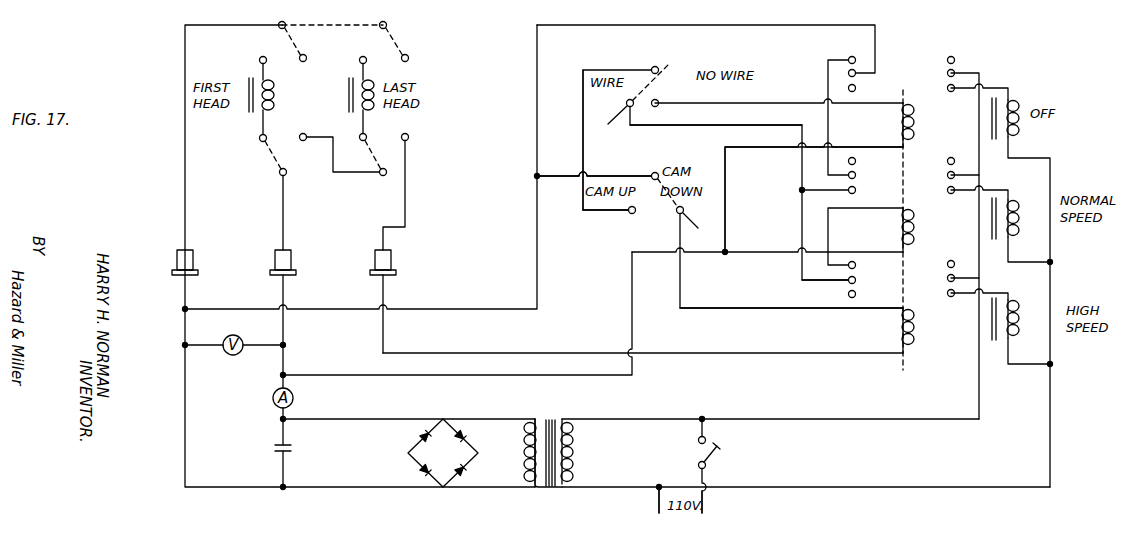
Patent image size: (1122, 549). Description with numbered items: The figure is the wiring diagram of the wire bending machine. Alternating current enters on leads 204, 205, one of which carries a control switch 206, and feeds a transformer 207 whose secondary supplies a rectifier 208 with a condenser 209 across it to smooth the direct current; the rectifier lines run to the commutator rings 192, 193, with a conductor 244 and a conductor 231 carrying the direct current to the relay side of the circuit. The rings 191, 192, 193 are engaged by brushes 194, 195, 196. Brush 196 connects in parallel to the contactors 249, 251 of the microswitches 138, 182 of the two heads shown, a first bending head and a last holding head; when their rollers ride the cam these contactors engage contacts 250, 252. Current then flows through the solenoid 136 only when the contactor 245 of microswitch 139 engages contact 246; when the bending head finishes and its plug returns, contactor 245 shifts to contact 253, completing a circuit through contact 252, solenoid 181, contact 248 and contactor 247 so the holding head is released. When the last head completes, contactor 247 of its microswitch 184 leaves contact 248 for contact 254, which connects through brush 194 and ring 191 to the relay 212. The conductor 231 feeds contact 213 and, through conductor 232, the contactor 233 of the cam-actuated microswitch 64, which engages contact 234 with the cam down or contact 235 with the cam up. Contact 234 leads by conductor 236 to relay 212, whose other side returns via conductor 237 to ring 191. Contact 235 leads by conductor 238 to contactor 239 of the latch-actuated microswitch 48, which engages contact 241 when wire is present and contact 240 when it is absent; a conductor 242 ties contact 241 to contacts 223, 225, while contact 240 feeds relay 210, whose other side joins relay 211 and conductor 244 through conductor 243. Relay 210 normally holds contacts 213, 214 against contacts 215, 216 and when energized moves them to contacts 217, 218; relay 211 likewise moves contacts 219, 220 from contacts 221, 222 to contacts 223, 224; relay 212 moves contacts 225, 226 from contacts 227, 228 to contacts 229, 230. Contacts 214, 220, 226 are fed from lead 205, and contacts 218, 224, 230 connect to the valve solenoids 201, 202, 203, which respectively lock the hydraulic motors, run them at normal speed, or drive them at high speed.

The microswitch 138 is at (280, 47).
The contactor 249 is at (297, 41).
The microswitch 182 is at (383, 47).
The contactor 251 is at (406, 41).
The contact 250 is at (259, 60).
The contact 252 is at (359, 60).
The solenoid 136 is at (275, 100).
The solenoid 181 is at (348, 90).
The contact 253 is at (303, 133).
The contact 248 is at (368, 142).
The microswitch 184 is at (396, 143).
The contact 254 is at (409, 138).
The contact 246 is at (259, 140).
The contactor 245 is at (283, 160).
The microswitch 139 is at (276, 183).
The contactor 247 is at (387, 168).
The brush 196 is at (195, 258).
The commutator ring 193 is at (198, 272).
The brush 195 is at (291, 258).
The commutator ring 192 is at (296, 272).
The brush 194 is at (391, 258).
The commutator ring 191 is at (396, 272).
The conductor 231 is at (483, 308).
The conductor 237 is at (581, 352).
The conductor 244 is at (452, 377).
The condenser 209 is at (274, 449).
The rectifier 208 is at (407, 454).
The transformer 207 is at (550, 418).
The lead 204 is at (658, 505).
The lead 205 is at (706, 507).
The control switch 206 is at (734, 458).
The conductor 238 is at (582, 118).
The microswitch 48 is at (616, 109).
The contactor 239 is at (686, 50).
The contact 240 is at (659, 102).
The contact 241 is at (610, 125).
The conductor 242 is at (741, 122).
The conductor 232 is at (603, 175).
The contactor 233 is at (671, 172).
The conductor 243 is at (768, 148).
The contact 235 is at (629, 213).
The microswitch 64 is at (664, 233).
The contact 234 is at (699, 226).
The conductor 236 is at (726, 307).
The contact 215 is at (849, 57).
The contact 213 is at (855, 72).
The contact 217 is at (856, 89).
The contact 216 is at (953, 56).
The contact 214 is at (955, 72).
The contact 218 is at (952, 92).
The relay winding 210 is at (915, 125).
The contact 222 is at (951, 157).
The contact 221 is at (856, 162).
The contact 219 is at (856, 176).
The contact 220 is at (947, 176).
The contact 223 is at (856, 191).
The contact 224 is at (950, 194).
The relay winding 211 is at (915, 232).
The contact 228 is at (951, 260).
The contact 227 is at (856, 266).
The contact 226 is at (948, 277).
The contact 225 is at (856, 282).
The contact 229 is at (848, 294).
The relay winding 212 is at (895, 331).
The contact 230 is at (951, 298).
The solenoid 201 is at (1017, 100).
The solenoid 202 is at (1014, 222).
The solenoid 203 is at (1014, 322).